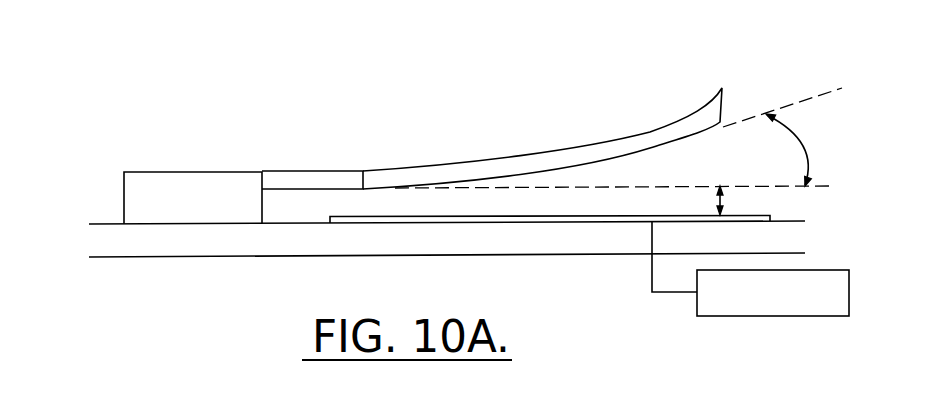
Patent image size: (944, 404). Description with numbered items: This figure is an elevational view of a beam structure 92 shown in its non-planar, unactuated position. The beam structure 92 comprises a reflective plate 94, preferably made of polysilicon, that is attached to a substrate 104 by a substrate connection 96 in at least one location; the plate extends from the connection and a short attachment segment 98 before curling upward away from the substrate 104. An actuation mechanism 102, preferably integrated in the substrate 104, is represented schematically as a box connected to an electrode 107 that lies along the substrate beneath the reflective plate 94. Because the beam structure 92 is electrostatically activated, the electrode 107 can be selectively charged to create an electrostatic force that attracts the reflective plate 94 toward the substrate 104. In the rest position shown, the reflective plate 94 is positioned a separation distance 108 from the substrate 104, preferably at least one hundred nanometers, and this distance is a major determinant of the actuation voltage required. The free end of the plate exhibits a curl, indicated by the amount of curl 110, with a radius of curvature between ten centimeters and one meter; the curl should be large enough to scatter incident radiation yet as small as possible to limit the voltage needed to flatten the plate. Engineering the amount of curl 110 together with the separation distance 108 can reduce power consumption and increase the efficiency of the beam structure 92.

The beam structure 92 is at (724, 32).
The reflective plate 94 is at (638, 135).
The substrate connection 96 is at (124, 207).
The beam attachment segment 98 is at (295, 171).
The actuation mechanism 102 is at (785, 317).
The substrate 104 is at (108, 257).
The electrode 107 is at (770, 228).
The separation distance 108 is at (722, 192).
The amount of curl 110 is at (802, 152).